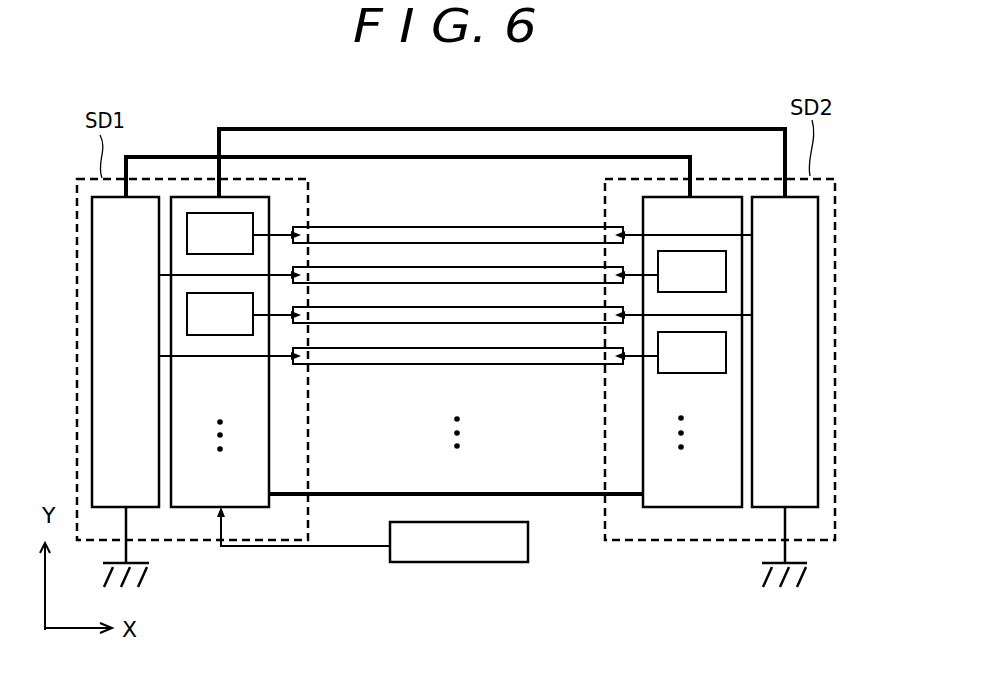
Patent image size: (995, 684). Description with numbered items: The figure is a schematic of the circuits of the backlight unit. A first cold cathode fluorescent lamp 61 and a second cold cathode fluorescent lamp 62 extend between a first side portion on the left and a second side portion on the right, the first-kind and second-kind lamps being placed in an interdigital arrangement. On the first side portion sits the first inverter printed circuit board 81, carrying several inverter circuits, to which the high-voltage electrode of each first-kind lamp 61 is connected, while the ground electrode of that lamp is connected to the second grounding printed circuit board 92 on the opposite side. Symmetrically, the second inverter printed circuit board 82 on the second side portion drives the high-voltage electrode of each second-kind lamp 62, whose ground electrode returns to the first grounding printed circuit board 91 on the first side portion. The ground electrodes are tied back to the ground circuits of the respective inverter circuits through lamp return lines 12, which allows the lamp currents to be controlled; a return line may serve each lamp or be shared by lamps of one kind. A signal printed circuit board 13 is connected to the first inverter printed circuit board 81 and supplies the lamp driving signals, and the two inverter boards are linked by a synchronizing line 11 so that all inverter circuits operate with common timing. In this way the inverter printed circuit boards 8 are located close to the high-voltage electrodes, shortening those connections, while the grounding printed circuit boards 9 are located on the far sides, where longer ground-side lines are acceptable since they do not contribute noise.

The lamp return line 12 is at (452, 157).
The first cold cathode fluorescent lamp 61 is at (353, 226).
The second cold cathode fluorescent lamp 62 is at (515, 266).
The first inverter printed circuit board 81 is at (269, 412).
The second inverter printed circuit board 82 is at (643, 418).
The inverter printed circuit board 8 is at (456, 352).
The synchronizing line 11 is at (417, 493).
The signal printed circuit board 13 is at (372, 534).
The first grounding printed circuit board 91 is at (150, 508).
The second grounding printed circuit board 92 is at (752, 507).
The grounding printed circuit board 9 is at (455, 428).